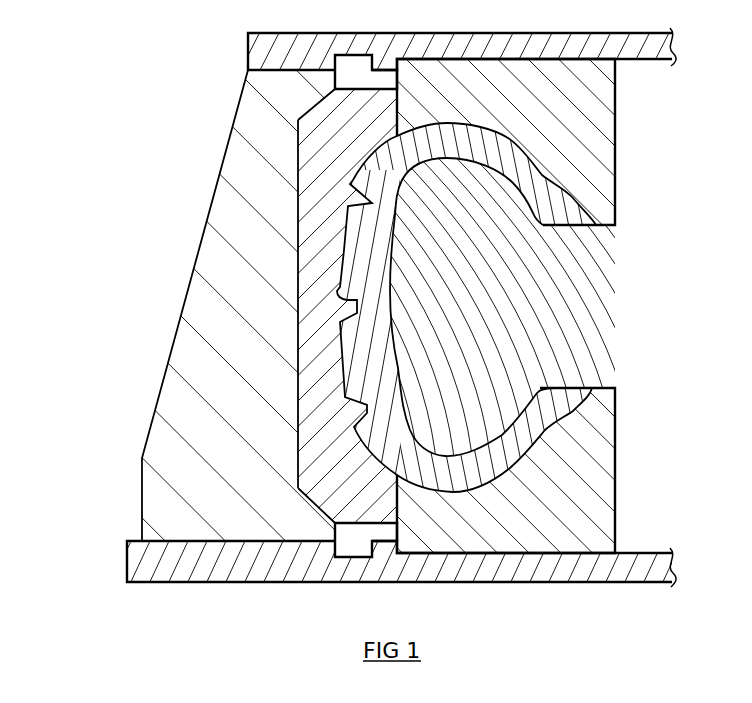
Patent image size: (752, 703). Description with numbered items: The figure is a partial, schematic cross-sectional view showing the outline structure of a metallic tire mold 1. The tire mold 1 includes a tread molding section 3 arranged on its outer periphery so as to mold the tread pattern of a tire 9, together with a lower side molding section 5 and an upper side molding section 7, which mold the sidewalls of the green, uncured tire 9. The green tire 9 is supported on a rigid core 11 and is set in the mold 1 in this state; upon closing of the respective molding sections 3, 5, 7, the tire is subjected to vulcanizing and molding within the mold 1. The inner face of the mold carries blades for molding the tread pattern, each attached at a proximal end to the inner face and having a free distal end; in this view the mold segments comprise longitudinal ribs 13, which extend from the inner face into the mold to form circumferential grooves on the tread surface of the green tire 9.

The tire mold 1 is at (170, 136).
The tread molding section 3 is at (308, 413).
The lower side molding section 5 is at (558, 495).
The upper side molding section 7 is at (588, 119).
The green tire 9 is at (557, 202).
The rigid core 11 is at (567, 295).
The longitudinal ribs 13 is at (315, 302).